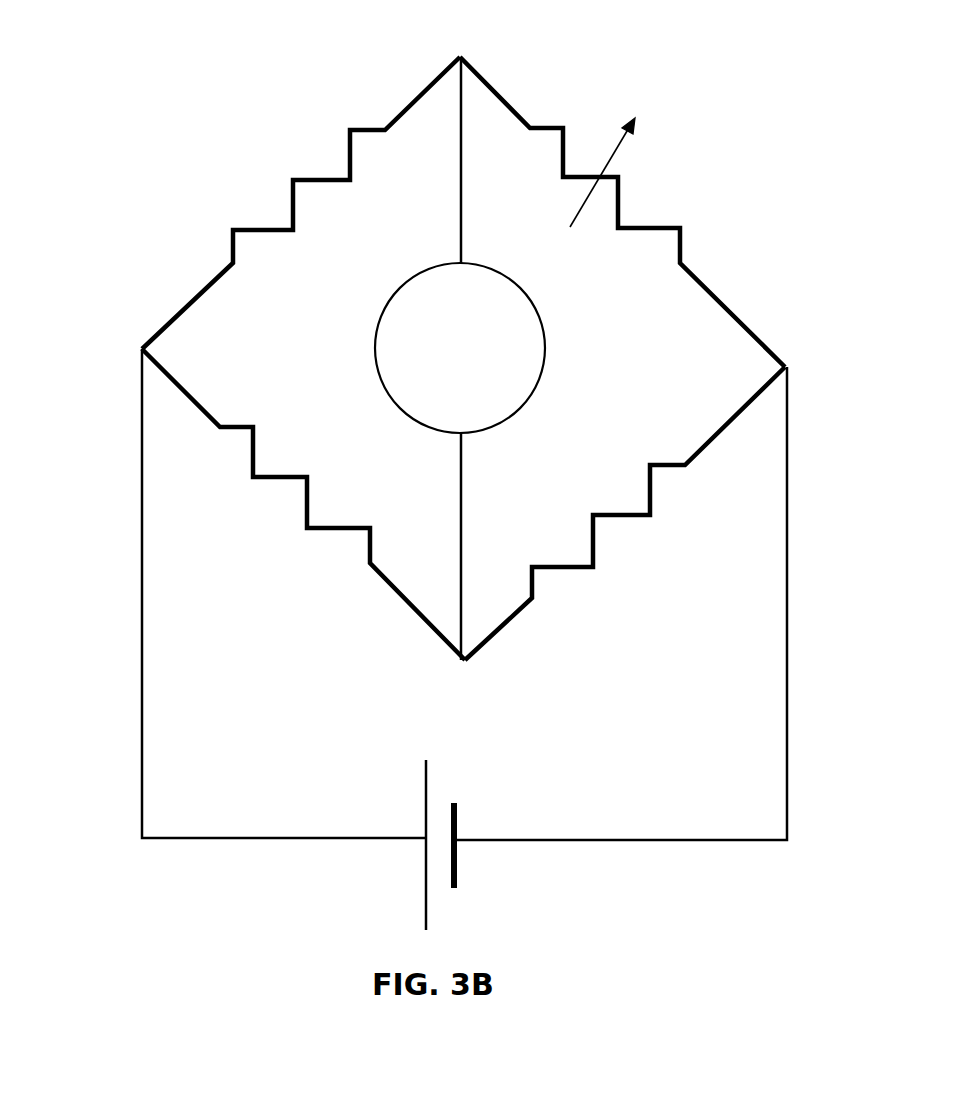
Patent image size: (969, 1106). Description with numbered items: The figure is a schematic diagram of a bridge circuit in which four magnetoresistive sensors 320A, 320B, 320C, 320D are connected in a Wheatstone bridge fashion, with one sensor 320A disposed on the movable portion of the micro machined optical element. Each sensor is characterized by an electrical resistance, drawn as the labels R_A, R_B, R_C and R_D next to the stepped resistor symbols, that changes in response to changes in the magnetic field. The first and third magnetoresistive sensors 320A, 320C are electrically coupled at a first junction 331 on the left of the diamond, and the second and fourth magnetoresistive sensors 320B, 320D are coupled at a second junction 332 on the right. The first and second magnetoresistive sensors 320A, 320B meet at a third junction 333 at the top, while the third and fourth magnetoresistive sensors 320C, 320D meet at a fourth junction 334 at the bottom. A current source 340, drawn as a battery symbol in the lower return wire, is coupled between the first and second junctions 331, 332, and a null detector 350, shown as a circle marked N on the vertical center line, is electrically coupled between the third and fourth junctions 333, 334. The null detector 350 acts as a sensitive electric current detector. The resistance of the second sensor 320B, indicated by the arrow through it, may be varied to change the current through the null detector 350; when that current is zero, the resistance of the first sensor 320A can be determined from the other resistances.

The first magnetoresistive sensor 320A is at (293, 203).
The second magnetoresistive sensor 320B is at (617, 175).
The third magnetoresistive sensor 320C is at (297, 478).
The fourth magnetoresistive sensor 320D is at (610, 518).
The first junction 331 is at (140, 348).
The second junction 332 is at (786, 365).
The third junction 333 is at (460, 57).
The fourth junction 334 is at (463, 665).
The current source 340 is at (486, 840).
The null detector 350 is at (500, 348).